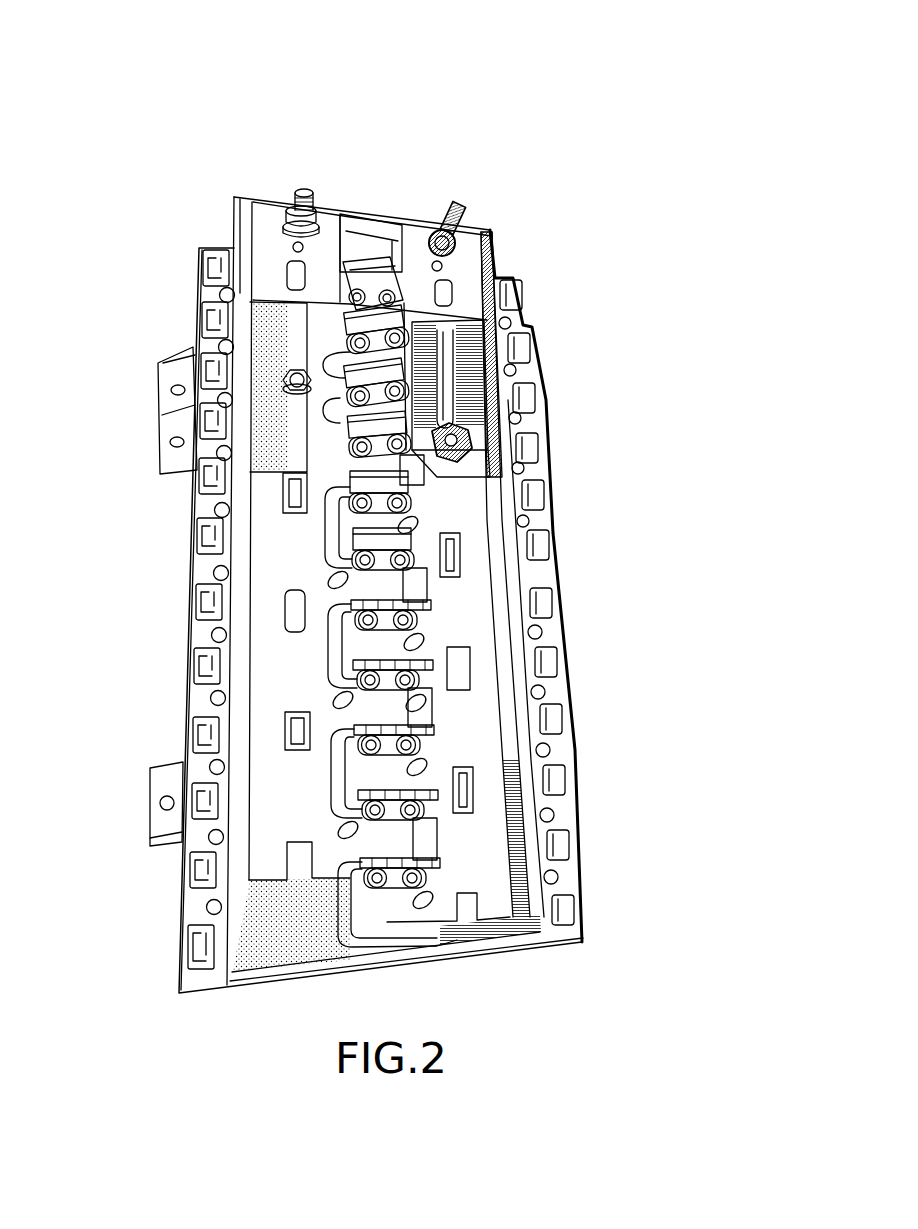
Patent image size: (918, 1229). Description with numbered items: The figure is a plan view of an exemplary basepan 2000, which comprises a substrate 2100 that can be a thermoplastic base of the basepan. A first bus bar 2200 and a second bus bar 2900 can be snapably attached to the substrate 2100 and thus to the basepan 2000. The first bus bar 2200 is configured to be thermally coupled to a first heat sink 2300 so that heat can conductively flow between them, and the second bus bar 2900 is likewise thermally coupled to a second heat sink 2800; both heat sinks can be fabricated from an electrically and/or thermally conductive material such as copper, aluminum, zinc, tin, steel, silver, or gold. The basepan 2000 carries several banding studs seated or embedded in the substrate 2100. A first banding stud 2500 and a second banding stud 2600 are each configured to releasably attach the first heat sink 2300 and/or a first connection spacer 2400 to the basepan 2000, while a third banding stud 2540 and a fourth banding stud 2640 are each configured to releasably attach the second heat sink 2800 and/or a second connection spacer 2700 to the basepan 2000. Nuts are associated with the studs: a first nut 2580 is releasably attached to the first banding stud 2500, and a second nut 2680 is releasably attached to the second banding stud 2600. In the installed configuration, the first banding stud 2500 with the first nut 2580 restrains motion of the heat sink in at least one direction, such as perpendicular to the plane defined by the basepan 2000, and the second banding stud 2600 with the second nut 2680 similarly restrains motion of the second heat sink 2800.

The basepan 2000 is at (158, 36).
The substrate 2100 is at (220, 730).
The first bus bar 2200 is at (277, 585).
The first heat sink 2300 is at (270, 315).
The first connection spacer 2400 is at (278, 268).
The first banding stud 2500 is at (310, 183).
The first nut 2580 is at (270, 213).
The third banding stud 2540 is at (283, 372).
The second banding stud 2600 is at (462, 193).
The second nut 2680 is at (472, 234).
The second connection spacer 2700 is at (462, 293).
The second heat sink 2800 is at (477, 350).
The fourth banding stud 2640 is at (463, 437).
The second bus bar 2900 is at (465, 592).